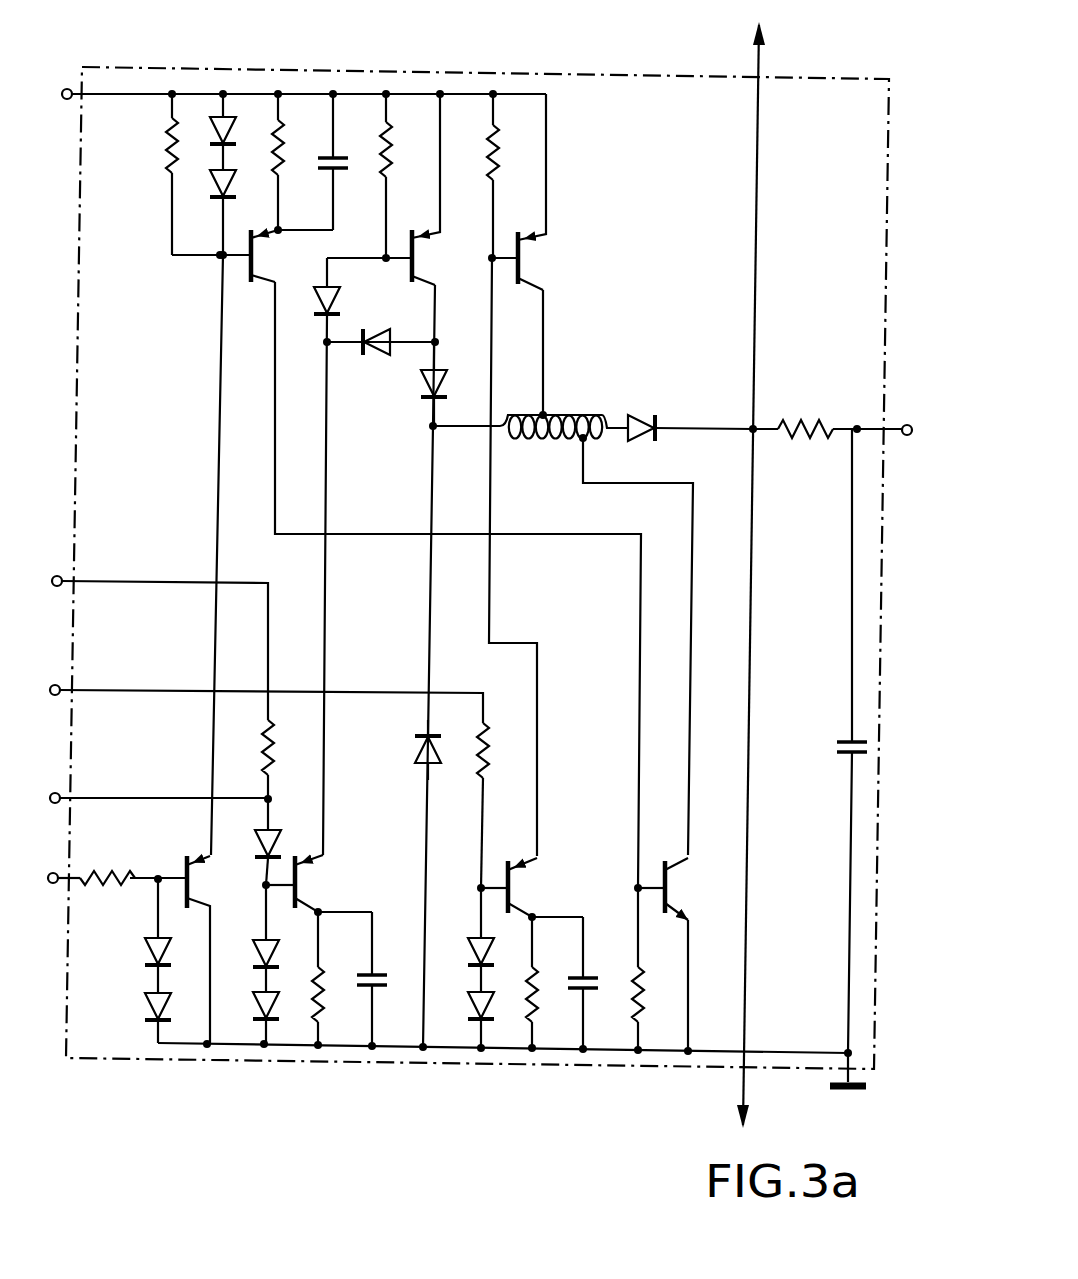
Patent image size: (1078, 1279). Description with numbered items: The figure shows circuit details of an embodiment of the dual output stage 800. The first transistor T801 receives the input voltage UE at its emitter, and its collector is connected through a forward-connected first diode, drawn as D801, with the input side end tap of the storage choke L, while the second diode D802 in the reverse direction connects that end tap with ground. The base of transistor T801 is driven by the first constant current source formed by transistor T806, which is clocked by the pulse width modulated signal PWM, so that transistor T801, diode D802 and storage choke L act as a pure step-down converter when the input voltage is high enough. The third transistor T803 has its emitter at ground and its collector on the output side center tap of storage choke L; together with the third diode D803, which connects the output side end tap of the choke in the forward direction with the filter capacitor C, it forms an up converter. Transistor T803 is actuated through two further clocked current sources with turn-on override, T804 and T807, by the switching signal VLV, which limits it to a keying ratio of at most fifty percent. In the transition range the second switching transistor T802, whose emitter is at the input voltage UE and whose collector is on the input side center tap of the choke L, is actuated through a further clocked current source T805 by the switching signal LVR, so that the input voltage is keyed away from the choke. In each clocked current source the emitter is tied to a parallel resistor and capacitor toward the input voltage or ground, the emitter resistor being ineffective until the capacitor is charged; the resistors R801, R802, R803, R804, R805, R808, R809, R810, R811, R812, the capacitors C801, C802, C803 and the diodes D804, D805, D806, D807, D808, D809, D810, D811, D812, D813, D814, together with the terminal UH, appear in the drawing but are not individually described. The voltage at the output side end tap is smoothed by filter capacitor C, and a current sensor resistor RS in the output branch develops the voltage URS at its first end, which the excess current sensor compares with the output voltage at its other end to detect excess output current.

The dual output stage 800 is at (562, 76).
The input voltage UE is at (70, 88).
The auxiliary voltage terminal UH is at (72, 578).
The switching signal of the first AND gate LVR is at (70, 686).
The pulse width modulated signal PWM is at (70, 794).
The switching signal of the second AND gate VLV is at (58, 886).
The voltage at the first end of resistor RS URS is at (756, 1106).
The resistor R801 is at (392, 133).
The resistor R802 is at (505, 170).
The resistor R803 is at (270, 133).
The resistor R804 is at (165, 140).
The resistor R805 is at (105, 870).
The resistor R808 is at (262, 745).
The resistor R809 is at (310, 1010).
The resistor R810 is at (498, 762).
The resistor R811 is at (525, 1010).
The resistor R812 is at (648, 1012).
The current sensor resistor RS is at (792, 442).
The capacitor C801 is at (338, 155).
The capacitor C802 is at (366, 990).
The capacitor C803 is at (590, 1000).
The filter capacitor C is at (845, 735).
The storage choke L is at (568, 417).
The diode D801 is at (420, 400).
The second diode D802 is at (418, 752).
The third diode D803 is at (632, 442).
The diode D804 is at (360, 352).
The diode D805 is at (334, 305).
The diode D806 is at (210, 190).
The diode D807 is at (208, 133).
The diode D808 is at (150, 1010).
The diode D809 is at (150, 968).
The diode D810 is at (252, 1012).
The diode D811 is at (248, 950).
The diode D812 is at (276, 845).
The diode D813 is at (468, 1012).
The diode D814 is at (466, 950).
The first switching transistor T801 is at (425, 268).
The second switching transistor T802 is at (525, 262).
The third switching transistor T803 is at (672, 902).
The clocked current source with turn-on override T804 is at (258, 288).
The further clocked current source T805 is at (520, 888).
The first constant current source transistor T806 is at (300, 892).
The clocked current source with turn-on override T807 is at (223, 950).